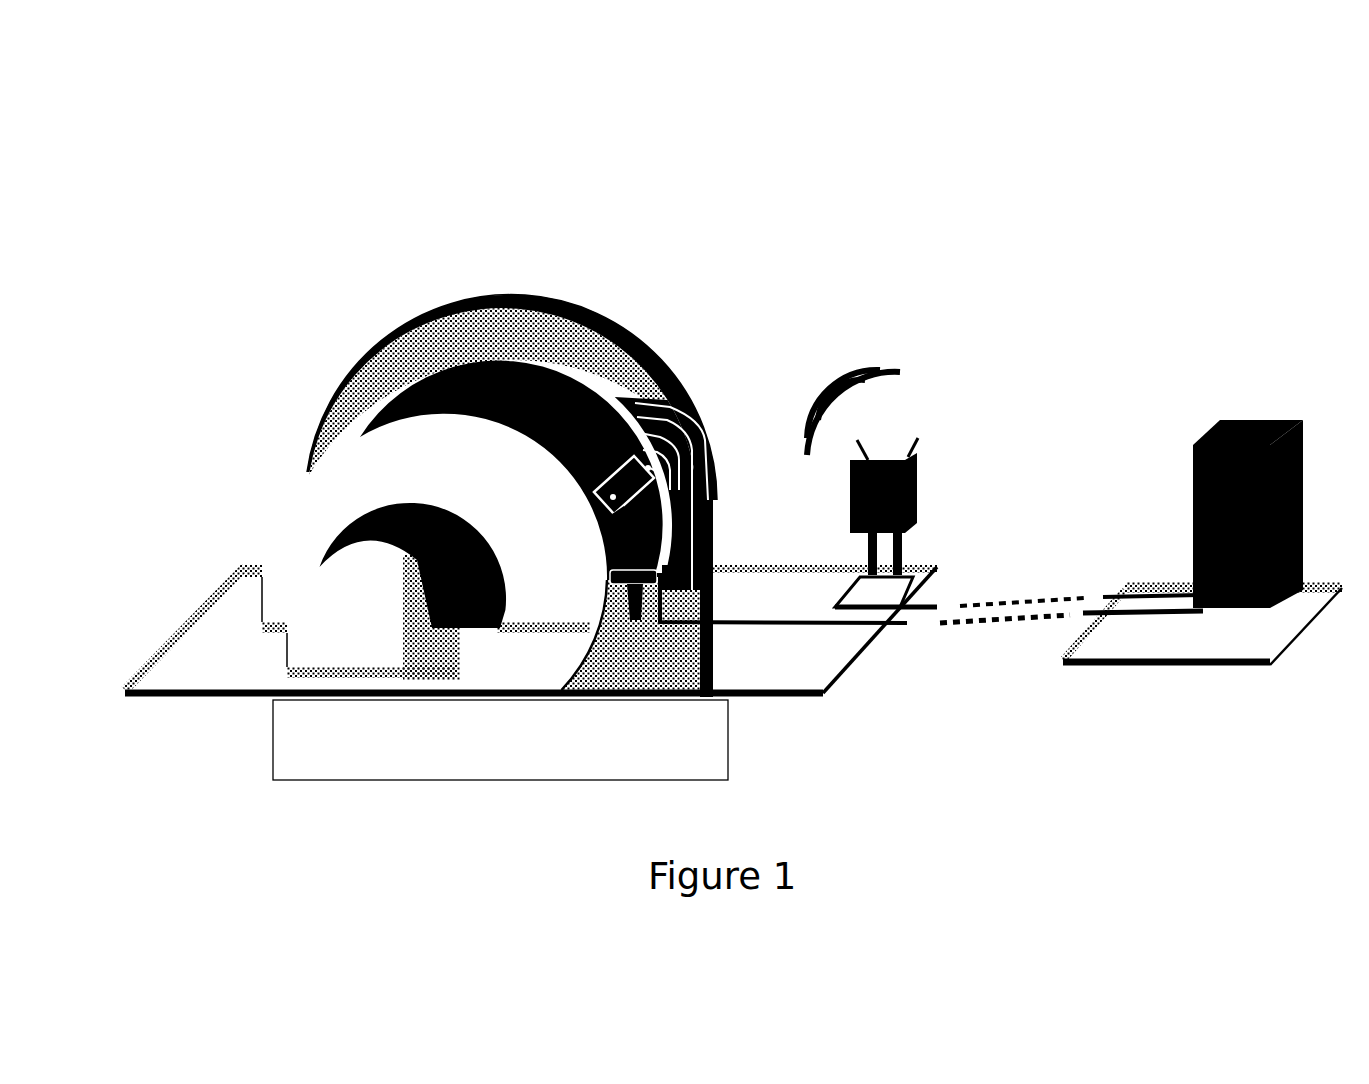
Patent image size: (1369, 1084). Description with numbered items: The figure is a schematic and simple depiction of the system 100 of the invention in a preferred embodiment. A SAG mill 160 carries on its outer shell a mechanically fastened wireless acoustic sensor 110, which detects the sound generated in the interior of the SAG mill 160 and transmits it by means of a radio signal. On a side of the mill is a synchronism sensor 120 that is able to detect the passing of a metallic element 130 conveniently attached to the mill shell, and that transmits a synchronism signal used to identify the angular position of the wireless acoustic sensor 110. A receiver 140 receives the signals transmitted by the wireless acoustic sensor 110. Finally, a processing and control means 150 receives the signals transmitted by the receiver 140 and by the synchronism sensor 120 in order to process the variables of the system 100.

The system 100 is at (800, 101).
The wireless acoustic sensor 110 is at (616, 465).
The synchronism sensor 120 is at (637, 618).
The metallic element 130 is at (608, 545).
The receiver 140 is at (887, 457).
The processing and control means 150 is at (1213, 433).
The SAG mill 160 is at (435, 410).